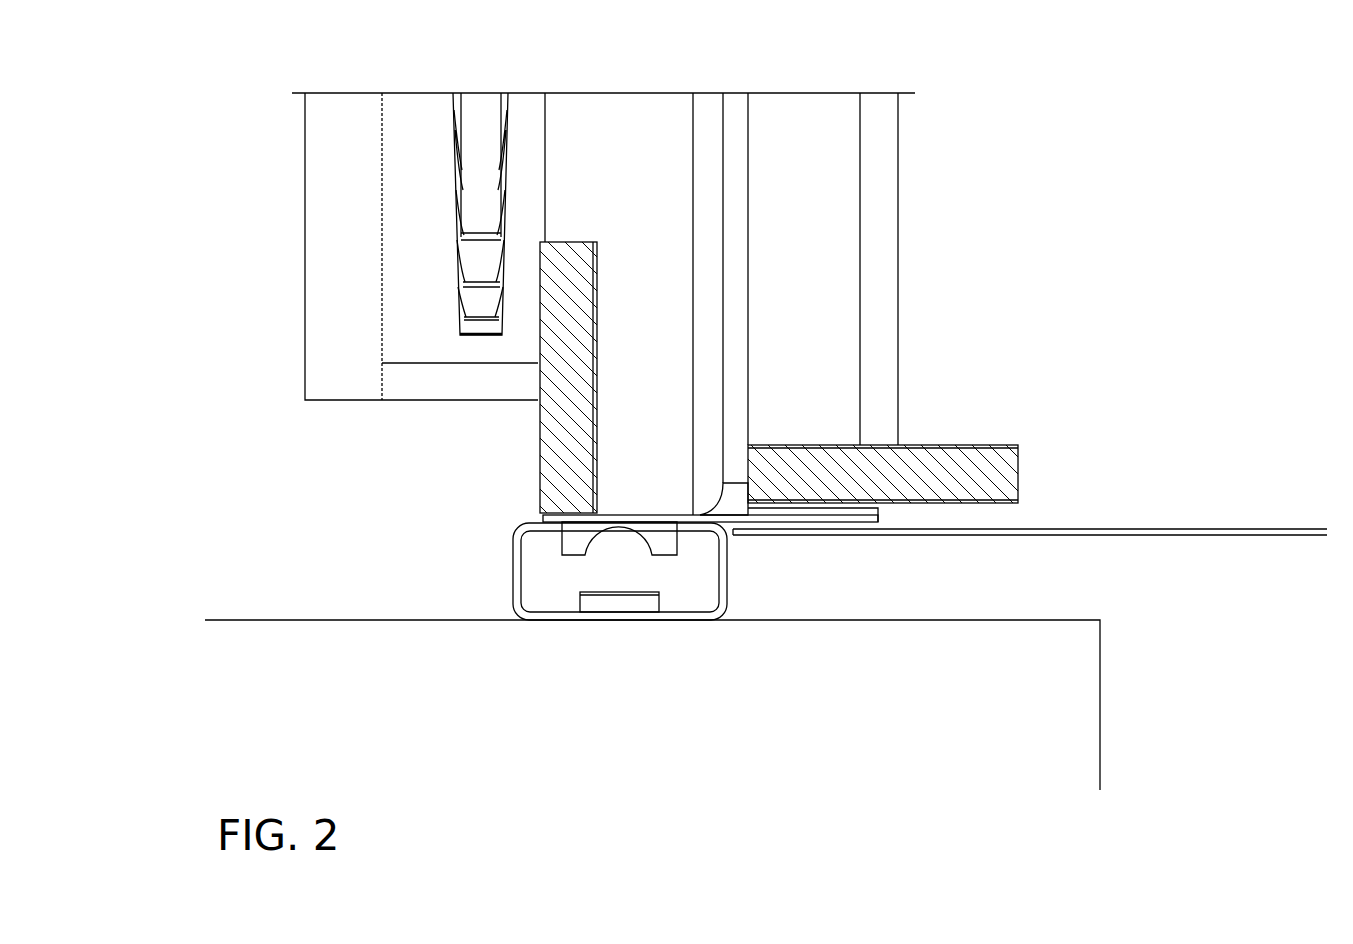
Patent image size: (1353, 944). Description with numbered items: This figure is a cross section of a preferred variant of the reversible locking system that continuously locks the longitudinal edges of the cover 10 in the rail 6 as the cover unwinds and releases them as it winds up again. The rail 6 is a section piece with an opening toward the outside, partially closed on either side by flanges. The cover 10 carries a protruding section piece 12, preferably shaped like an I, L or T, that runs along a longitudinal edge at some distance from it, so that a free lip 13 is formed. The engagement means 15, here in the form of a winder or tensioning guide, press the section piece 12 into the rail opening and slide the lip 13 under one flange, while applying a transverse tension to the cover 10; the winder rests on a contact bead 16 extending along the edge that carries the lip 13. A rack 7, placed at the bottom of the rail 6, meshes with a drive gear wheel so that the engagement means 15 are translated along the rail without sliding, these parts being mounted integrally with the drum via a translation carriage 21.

The translation carriage 21 is at (298, 318).
The engagement means 15 is at (590, 242).
The contact bead 16 is at (723, 484).
The lip 13 is at (618, 517).
The section piece 12 is at (562, 547).
The rail 6 is at (720, 573).
The rack 7 is at (635, 602).
The cover 10 is at (1173, 537).